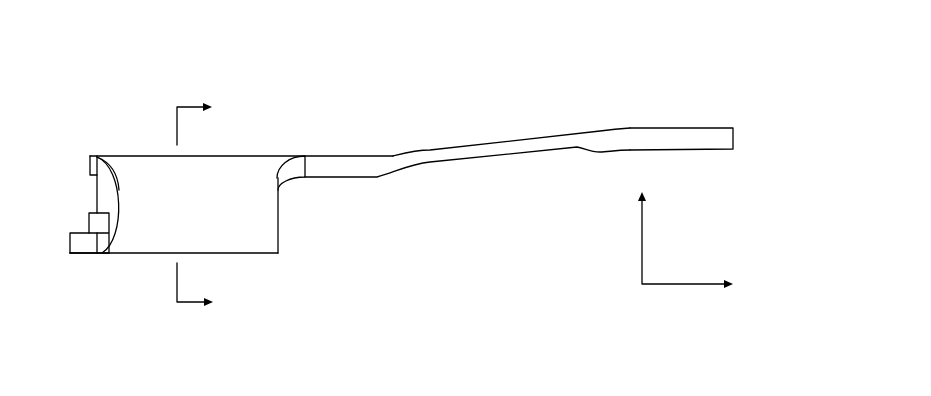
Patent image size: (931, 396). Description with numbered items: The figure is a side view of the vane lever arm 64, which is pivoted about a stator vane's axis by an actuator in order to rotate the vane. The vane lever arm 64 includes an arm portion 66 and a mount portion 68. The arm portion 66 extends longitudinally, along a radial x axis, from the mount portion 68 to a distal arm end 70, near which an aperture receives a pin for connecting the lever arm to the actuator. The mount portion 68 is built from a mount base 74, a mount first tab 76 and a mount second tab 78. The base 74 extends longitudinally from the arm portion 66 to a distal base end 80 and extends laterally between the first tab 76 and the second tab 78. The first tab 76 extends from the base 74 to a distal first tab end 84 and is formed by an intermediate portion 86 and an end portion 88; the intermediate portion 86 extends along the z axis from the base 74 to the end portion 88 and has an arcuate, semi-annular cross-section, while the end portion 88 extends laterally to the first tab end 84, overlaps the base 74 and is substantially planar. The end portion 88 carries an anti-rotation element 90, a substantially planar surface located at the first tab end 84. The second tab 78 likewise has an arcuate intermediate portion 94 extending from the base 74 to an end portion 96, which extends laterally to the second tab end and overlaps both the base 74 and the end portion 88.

The vane lever arm 64 is at (92, 82).
The arm portion 66 is at (497, 137).
The mount portion 68 is at (232, 150).
The distal arm end 70 is at (733, 141).
The mount base 74 is at (142, 156).
The mount first tab 76 is at (117, 206).
The mount second tab 78 is at (278, 214).
The distal base end 80 is at (89, 162).
The distal first tab end 84 is at (93, 227).
The intermediate portion 86 is at (117, 190).
The end portion 88 is at (93, 217).
The anti-rotation element 90 is at (83, 243).
The intermediate portion 94 is at (255, 222).
The end portion 96 is at (83, 253).